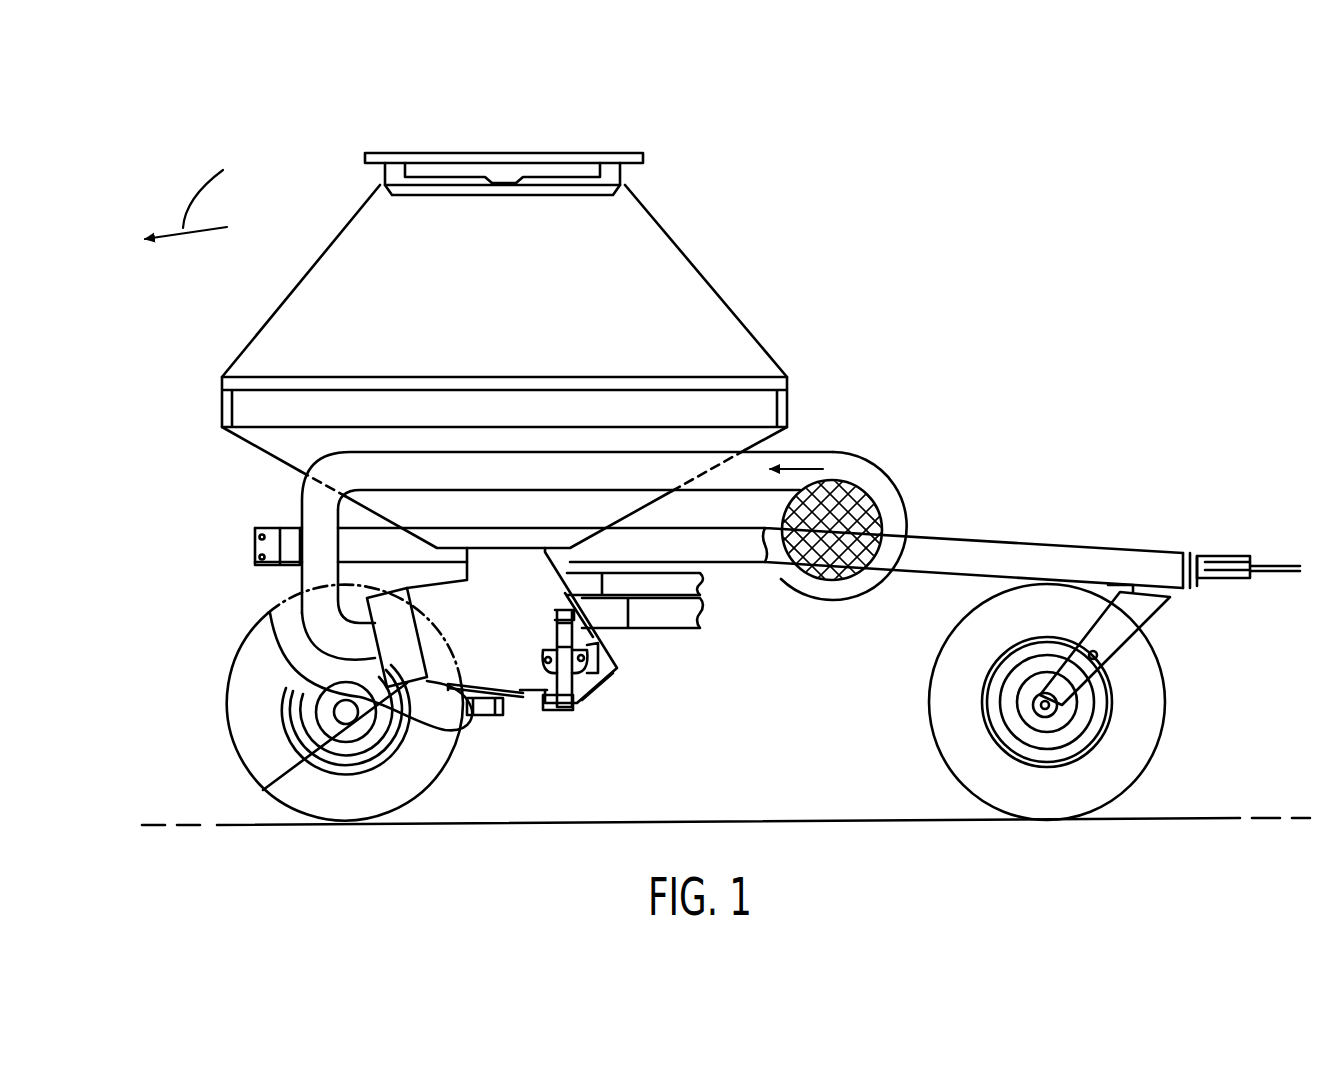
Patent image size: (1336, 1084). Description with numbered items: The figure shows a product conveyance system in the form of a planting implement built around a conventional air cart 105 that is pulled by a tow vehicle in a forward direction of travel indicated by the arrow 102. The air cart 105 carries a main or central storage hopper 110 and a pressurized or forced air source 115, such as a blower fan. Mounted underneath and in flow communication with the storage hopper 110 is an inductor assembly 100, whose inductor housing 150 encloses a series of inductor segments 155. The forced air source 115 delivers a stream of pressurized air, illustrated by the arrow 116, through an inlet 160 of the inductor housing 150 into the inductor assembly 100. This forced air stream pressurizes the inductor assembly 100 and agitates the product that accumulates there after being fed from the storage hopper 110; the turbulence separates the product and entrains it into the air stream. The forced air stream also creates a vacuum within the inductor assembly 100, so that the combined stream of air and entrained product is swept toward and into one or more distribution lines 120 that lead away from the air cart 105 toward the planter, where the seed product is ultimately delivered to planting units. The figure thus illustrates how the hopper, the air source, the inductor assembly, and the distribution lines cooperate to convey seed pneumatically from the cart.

The inductor assembly 100 is at (527, 714).
The arrow 102 is at (217, 188).
The air cart 105 is at (980, 212).
The storage hopper 110 is at (705, 262).
The forced air source 115 is at (895, 466).
The arrow 116 is at (797, 472).
The distribution lines 120 is at (677, 628).
The inductor housing 150 is at (440, 725).
The inductor segments 155 is at (263, 790).
The inlet 160 is at (514, 712).